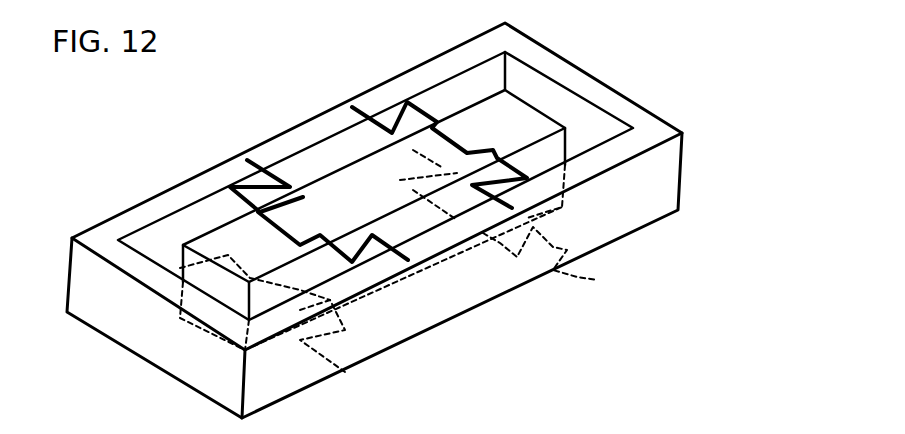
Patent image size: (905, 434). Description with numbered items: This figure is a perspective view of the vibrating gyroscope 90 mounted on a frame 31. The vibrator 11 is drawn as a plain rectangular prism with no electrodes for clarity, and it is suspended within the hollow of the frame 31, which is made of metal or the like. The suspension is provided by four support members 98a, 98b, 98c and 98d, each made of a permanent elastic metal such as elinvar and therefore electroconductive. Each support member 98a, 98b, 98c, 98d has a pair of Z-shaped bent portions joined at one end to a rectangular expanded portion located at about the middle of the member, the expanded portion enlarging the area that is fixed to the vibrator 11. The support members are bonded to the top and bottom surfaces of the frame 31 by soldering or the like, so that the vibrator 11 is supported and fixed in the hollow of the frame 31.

The vibrating gyroscope 90 is at (602, 55).
The frame 31 is at (613, 98).
The vibrator 11 is at (493, 115).
The support member 98a is at (244, 157).
The support member 98b is at (367, 110).
The support member 98c is at (345, 372).
The support member 98d is at (598, 280).